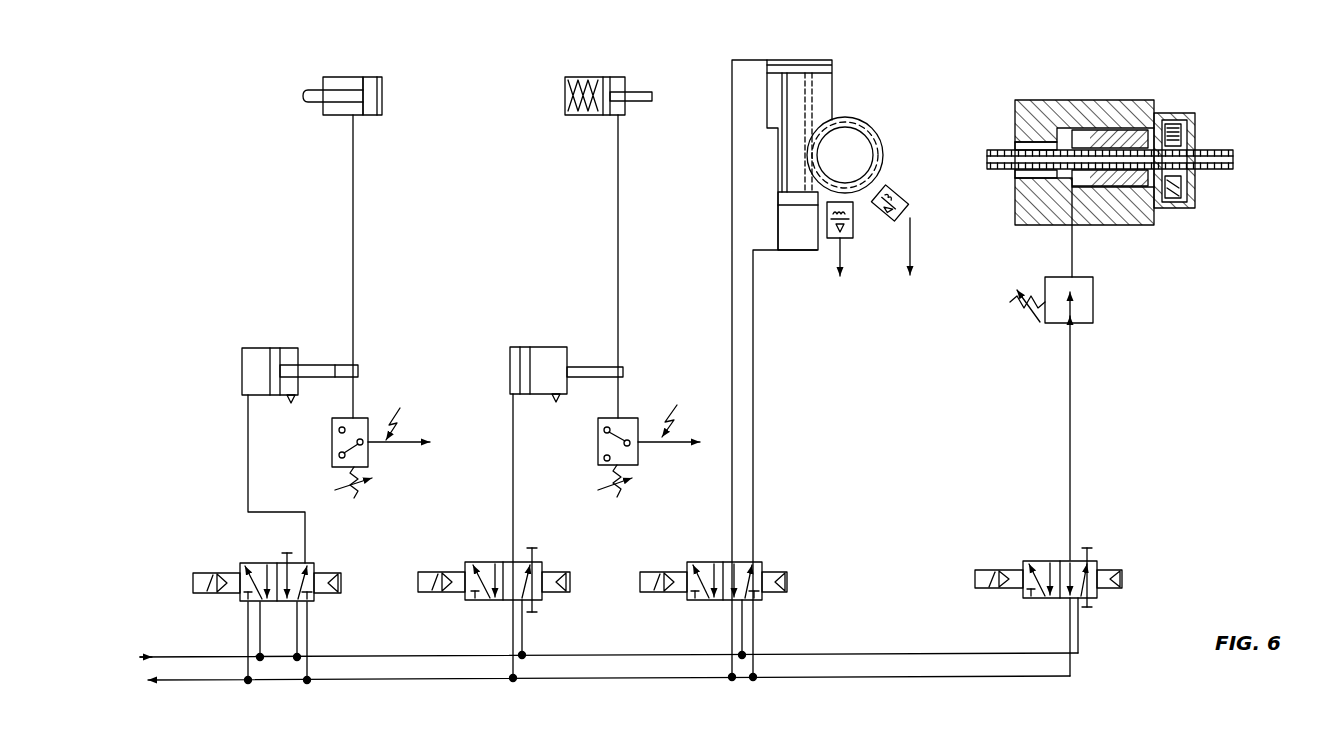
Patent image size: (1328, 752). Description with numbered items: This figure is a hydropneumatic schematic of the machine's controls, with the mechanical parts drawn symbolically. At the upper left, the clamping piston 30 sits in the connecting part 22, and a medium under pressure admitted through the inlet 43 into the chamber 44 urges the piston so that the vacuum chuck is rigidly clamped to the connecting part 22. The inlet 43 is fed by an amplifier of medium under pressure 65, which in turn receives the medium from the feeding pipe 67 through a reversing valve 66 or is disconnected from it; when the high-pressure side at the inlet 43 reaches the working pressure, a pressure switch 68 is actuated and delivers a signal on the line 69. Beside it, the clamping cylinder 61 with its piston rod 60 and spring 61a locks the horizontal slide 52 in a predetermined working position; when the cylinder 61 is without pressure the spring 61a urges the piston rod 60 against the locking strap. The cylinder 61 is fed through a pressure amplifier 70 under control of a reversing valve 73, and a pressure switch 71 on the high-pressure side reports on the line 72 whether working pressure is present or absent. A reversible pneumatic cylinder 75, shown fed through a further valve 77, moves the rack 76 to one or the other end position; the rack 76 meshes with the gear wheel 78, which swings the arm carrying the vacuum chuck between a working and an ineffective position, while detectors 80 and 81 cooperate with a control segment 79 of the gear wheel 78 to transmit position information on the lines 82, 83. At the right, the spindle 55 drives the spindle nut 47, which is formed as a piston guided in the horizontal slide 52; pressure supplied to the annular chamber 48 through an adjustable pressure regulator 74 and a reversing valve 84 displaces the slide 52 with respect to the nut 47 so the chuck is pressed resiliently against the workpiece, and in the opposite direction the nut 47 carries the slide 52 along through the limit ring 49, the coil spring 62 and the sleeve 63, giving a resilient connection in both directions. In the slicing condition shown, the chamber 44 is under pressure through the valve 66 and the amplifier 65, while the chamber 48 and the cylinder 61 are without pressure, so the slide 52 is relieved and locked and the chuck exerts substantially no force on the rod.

The connecting part 22 is at (385, 87).
The clamping piston 30 is at (368, 83).
The inlet 43 is at (356, 135).
The chamber 44 is at (338, 80).
The spindle nut 47 is at (1135, 182).
The annular chamber 48 is at (1098, 133).
The limit ring 49 is at (1175, 195).
The horizontal slide 52 is at (1135, 108).
The spindle 55 is at (1235, 165).
The piston rod 60 is at (638, 100).
The clamping cylinder 61 is at (613, 77).
The spring 61a is at (578, 118).
The coil spring 62 is at (1195, 135).
The sleeve 63 is at (1188, 115).
The amplifier of medium under pressure 65 is at (258, 345).
The reversing valve 66 is at (242, 553).
The feeding pipe 67 is at (180, 655).
The pressure switch 68 is at (360, 414).
The line 69 is at (405, 445).
The pressure amplifier 70 is at (556, 342).
The pressure switch 71 is at (630, 414).
The line 72 is at (673, 448).
The reversing valve 73 is at (500, 553).
The pressure regulator 74 is at (1060, 328).
The reversible pneumatic cylinder 75 is at (765, 185).
The rack 76 is at (800, 98).
The control valve 77 is at (770, 553).
The gear wheel 78 is at (843, 152).
The control segment 79 is at (885, 158).
The detector 80 is at (905, 200).
The detector 81 is at (857, 222).
The line 82 is at (912, 250).
The line 83 is at (835, 250).
The reversing valve 84 is at (1107, 550).